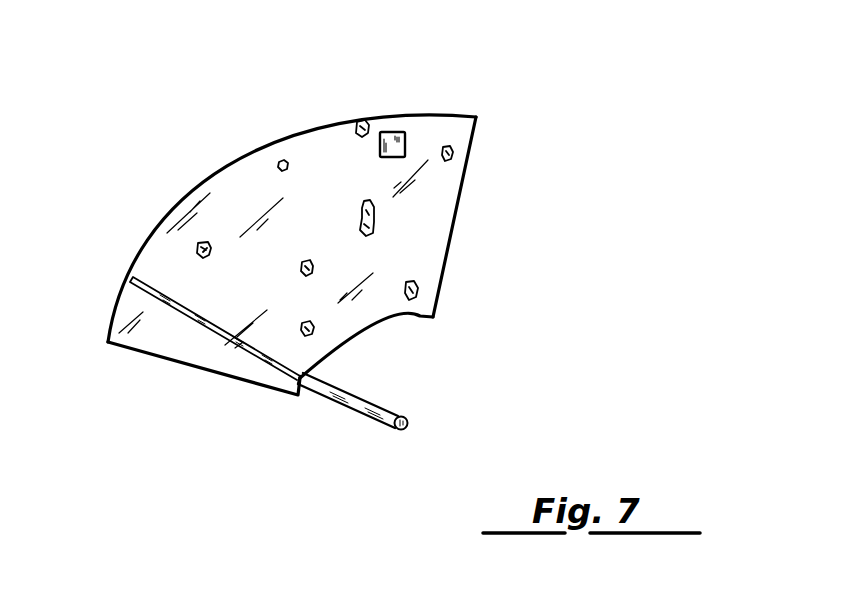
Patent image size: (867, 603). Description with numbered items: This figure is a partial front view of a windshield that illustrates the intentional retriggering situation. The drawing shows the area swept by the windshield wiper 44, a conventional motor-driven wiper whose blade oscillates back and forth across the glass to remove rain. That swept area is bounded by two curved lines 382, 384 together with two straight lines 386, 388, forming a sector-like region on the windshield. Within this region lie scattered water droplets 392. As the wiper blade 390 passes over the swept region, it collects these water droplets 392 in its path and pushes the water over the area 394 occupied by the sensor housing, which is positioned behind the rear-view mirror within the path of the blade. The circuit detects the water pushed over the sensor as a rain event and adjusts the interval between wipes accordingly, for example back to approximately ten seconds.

The curved line 382 is at (149, 242).
The curved line 384 is at (353, 331).
The straight line 386 is at (180, 366).
The straight line 388 is at (472, 136).
The wiper blade 390 is at (163, 297).
The water droplets 392 is at (360, 137).
The area occupied by the sensor housing 394 is at (395, 132).
The windshield wiper 44 is at (334, 394).